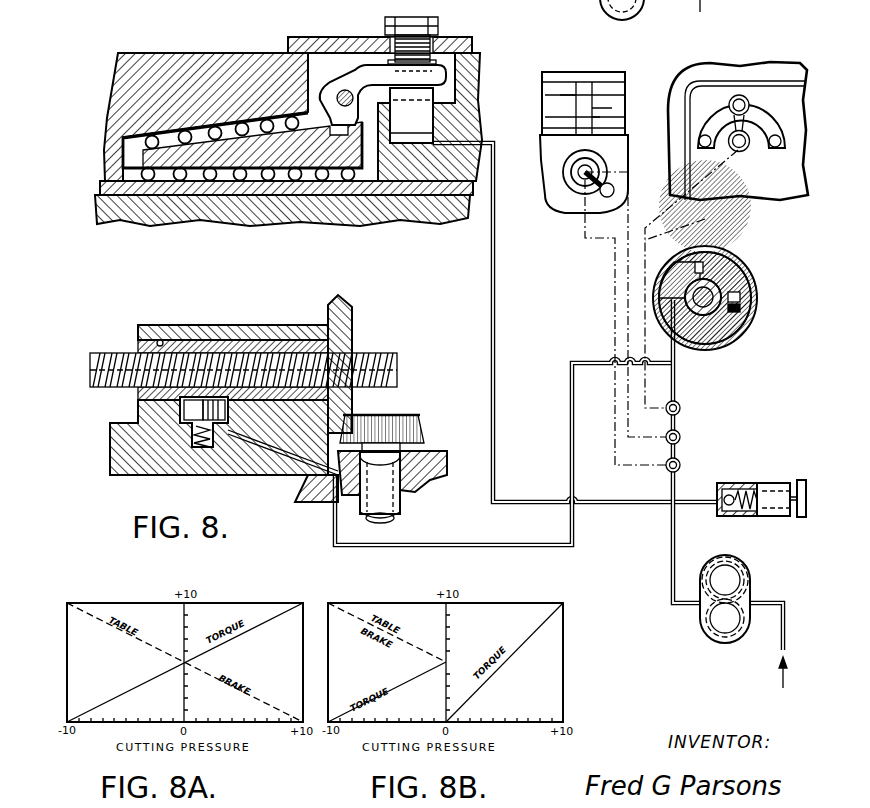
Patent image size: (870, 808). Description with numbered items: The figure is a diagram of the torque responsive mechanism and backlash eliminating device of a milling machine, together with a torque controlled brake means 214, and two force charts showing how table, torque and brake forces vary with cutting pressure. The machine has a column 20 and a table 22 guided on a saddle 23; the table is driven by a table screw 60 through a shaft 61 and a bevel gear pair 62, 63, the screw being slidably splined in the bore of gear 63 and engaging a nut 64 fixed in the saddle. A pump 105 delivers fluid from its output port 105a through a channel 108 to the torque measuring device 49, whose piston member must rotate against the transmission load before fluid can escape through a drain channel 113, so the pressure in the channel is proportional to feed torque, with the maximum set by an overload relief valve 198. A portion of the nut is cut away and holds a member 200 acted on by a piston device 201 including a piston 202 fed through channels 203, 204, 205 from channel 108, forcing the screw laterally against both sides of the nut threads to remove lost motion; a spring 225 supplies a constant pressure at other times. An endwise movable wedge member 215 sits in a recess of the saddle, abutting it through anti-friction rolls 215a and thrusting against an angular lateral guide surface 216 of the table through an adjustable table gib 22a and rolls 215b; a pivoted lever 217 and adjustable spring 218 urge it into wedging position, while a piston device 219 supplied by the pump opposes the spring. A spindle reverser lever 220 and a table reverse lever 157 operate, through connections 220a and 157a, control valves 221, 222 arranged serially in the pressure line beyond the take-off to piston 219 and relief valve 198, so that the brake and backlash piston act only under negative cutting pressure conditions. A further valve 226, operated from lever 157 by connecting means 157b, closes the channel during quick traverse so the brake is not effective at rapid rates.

The column 20 is at (777, 62).
The table 22 is at (118, 226).
The table gib 22a is at (240, 192).
The saddle 23 is at (128, 60).
The torque measuring device 49 is at (757, 262).
The table screw 60 is at (390, 372).
The shaft 61 is at (400, 515).
The bevel gear 62 is at (420, 426).
The bevel gear 63 is at (352, 305).
The nut 64 is at (225, 340).
The pump 105 is at (735, 582).
The output port 105a is at (614, 10).
The channel 108 is at (670, 490).
The drain channel 113 is at (696, 267).
The table reverse lever 157 is at (583, 172).
The control connection 157a is at (628, 322).
The connecting means 157b is at (614, 270).
The overload relief valve 198 is at (772, 515).
The member 200 is at (185, 400).
The piston device 201 is at (185, 410).
The piston 202 is at (186, 430).
The channel 203 is at (255, 425).
The channel 204 is at (320, 503).
The channel 205 is at (500, 547).
The torque controlled brake means 214 is at (212, 50).
The wedge member 215 is at (145, 158).
The anti-friction rolls 215a is at (175, 120).
The anti-friction rolls 215b is at (298, 196).
The angular lateral guide surface 216 is at (185, 196).
The pivoted lever 217 is at (360, 80).
The adjustable spring 218 is at (385, 58).
The piston device 219 is at (432, 118).
The spindle reverser lever 220 is at (742, 150).
The control connection 220a is at (702, 220).
The control valve 221 is at (681, 405).
The control valve 222 is at (681, 435).
The spring 225 is at (203, 443).
The valve 226 is at (681, 463).